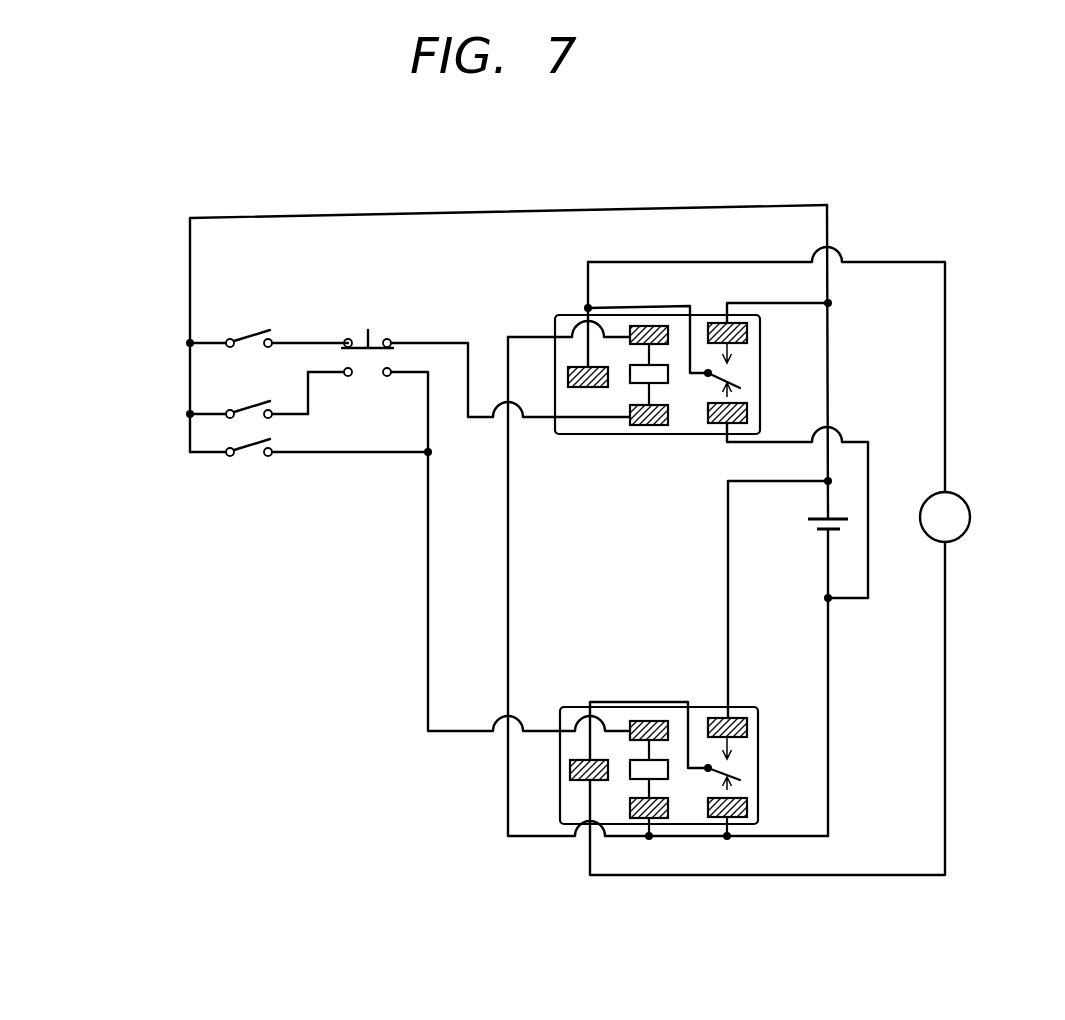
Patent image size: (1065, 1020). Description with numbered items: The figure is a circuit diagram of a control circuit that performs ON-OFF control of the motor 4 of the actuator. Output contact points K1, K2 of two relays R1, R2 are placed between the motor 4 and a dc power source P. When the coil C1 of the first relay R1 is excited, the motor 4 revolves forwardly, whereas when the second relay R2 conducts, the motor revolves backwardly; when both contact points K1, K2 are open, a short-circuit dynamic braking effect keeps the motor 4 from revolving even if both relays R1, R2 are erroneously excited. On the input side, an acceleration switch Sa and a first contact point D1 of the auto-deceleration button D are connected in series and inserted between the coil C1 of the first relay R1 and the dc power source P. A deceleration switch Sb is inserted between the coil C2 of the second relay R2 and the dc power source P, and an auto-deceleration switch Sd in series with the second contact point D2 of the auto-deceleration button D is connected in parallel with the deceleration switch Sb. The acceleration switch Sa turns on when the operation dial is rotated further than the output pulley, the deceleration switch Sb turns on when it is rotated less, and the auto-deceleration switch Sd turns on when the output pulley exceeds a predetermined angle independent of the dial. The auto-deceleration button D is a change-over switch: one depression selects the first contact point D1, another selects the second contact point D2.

The acceleration switch Sa is at (238, 324).
The auto-deceleration switch Sd is at (241, 396).
The deceleration switch Sb is at (244, 464).
The auto-deceleration button D is at (366, 356).
The first contact point of the auto-deceleration button D1 is at (377, 330).
The second contact point of the auto-deceleration button D2 is at (364, 386).
The first relay R1 is at (810, 355).
The output contact point of the first relay K1 is at (751, 382).
The coil of the first relay C1 is at (630, 380).
The second relay R2 is at (752, 810).
The output contact point of the second relay K2 is at (751, 772).
The coil of the second relay C2 is at (632, 770).
The dc power source P is at (852, 509).
The motor 4 is at (970, 517).